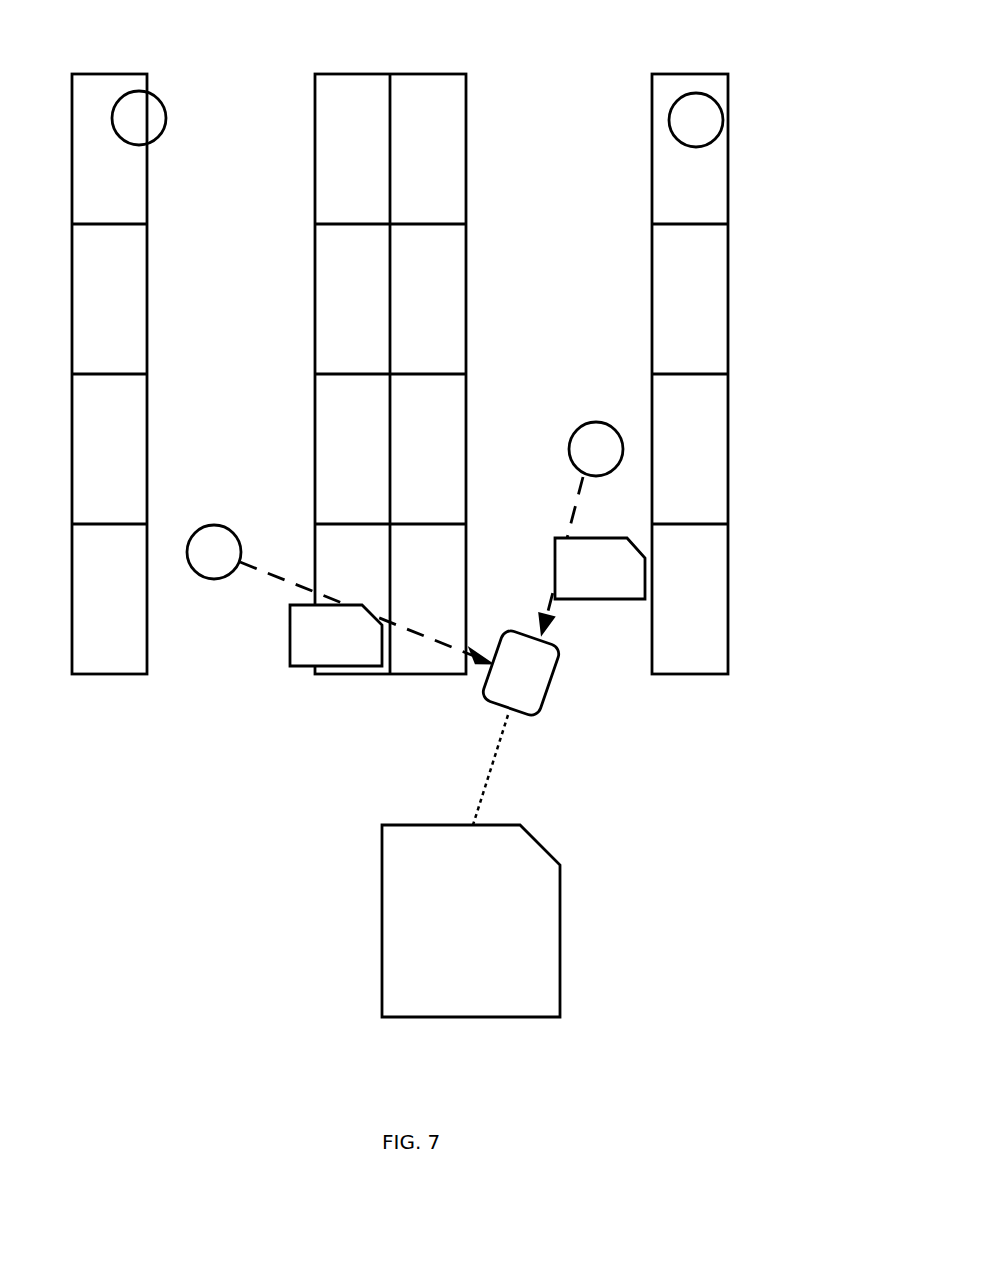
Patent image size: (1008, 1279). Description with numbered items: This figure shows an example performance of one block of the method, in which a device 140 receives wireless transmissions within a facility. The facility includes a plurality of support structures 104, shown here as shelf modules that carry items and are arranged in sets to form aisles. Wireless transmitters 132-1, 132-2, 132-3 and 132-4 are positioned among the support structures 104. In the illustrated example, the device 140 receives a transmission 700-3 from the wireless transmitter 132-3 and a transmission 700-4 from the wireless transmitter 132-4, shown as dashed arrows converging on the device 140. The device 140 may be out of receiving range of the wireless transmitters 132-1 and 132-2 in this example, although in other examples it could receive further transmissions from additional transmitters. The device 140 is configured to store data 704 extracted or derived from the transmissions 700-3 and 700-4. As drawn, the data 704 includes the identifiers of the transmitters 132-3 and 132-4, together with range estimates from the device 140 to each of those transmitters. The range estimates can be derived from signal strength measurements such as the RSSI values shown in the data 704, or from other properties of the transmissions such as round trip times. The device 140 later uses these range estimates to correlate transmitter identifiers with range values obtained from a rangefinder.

The support structure 104 is at (728, 337).
The wireless transmitter 132-1 is at (132, 91).
The wireless transmitter 132-2 is at (700, 93).
The wireless transmitter 132-3 is at (597, 422).
The wireless transmitter 132-4 is at (213, 525).
The device 140 is at (502, 684).
The transmission 700-3 is at (630, 581).
The transmission 700-4 is at (365, 647).
The data 704 is at (577, 916).